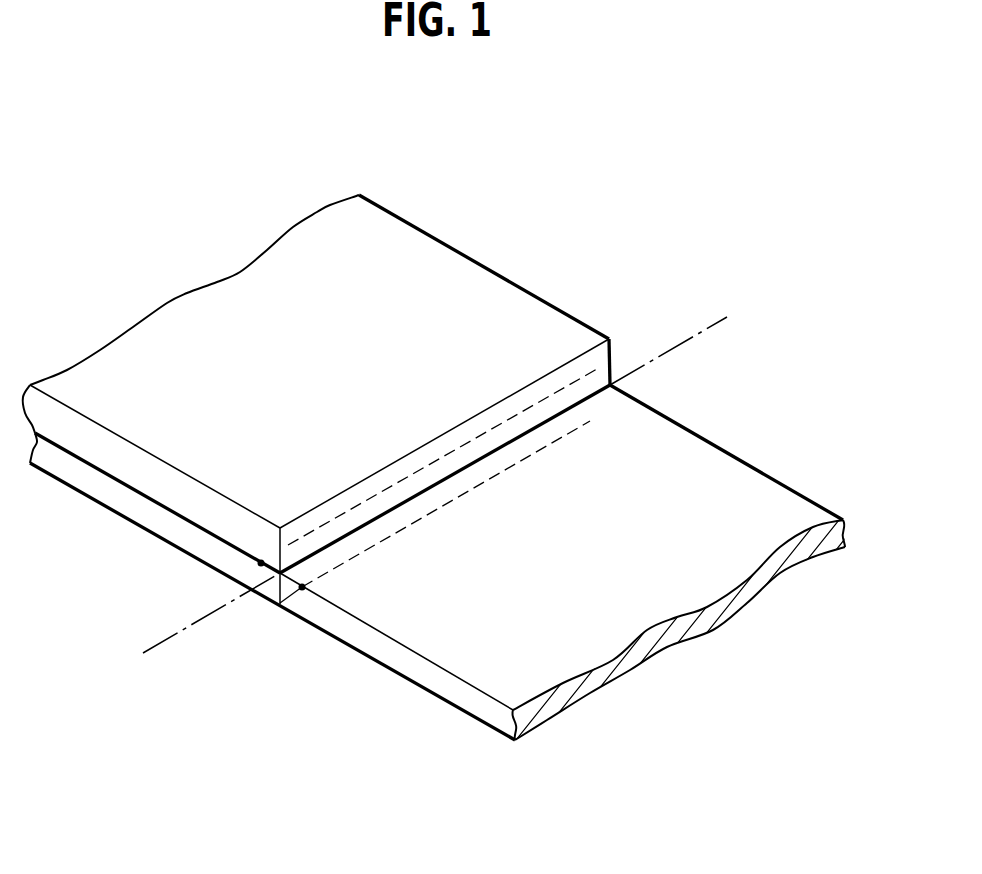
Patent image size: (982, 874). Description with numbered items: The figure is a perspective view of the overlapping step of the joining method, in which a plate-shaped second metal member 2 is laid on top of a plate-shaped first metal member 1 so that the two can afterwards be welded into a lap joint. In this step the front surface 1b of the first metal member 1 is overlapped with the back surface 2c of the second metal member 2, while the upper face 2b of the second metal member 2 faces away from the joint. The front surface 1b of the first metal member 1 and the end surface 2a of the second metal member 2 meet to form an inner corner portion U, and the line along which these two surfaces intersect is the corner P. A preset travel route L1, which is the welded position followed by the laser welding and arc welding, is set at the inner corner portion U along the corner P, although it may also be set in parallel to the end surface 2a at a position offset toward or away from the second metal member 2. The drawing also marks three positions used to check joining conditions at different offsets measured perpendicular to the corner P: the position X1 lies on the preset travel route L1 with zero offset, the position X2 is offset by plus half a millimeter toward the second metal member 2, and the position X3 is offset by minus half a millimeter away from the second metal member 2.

The first metal member 1 is at (506, 572).
The front surface 1b is at (703, 473).
The second metal member 2 is at (334, 384).
The end surface 2a is at (600, 361).
The upper surface of second member 2b is at (440, 277).
The back surface 2c is at (138, 497).
The preset travel route L1 is at (697, 330).
The inner corner portion U is at (580, 413).
The corner P is at (380, 518).
The position X1 is at (280, 602).
The position X2 is at (261, 563).
The position X3 is at (280, 604).